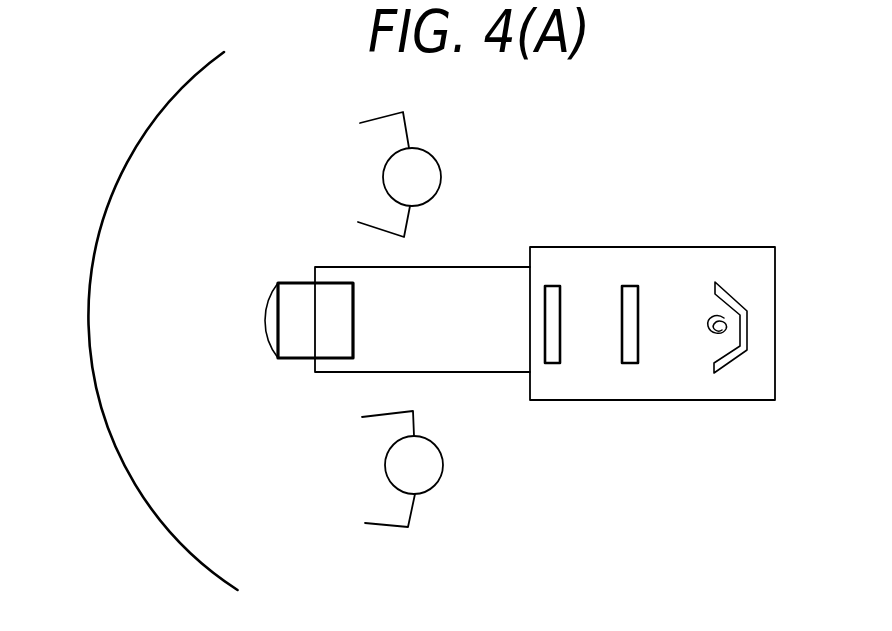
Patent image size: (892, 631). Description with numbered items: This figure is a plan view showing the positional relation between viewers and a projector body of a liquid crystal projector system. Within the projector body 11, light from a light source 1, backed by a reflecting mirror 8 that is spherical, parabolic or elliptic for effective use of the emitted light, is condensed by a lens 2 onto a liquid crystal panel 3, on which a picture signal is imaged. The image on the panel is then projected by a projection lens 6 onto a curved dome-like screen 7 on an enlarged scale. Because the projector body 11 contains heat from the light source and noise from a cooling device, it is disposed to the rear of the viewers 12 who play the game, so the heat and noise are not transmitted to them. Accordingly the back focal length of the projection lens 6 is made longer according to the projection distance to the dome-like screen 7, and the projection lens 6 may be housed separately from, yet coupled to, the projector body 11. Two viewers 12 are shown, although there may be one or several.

The light source 1 is at (718, 343).
The lens 2 is at (627, 363).
The liquid crystal panel 3 is at (548, 363).
The projection lens 6 is at (300, 360).
The dome-like screen 7 is at (167, 532).
The reflecting mirror 8 is at (733, 292).
The projector body 11 is at (658, 247).
The viewers 12 is at (430, 152).